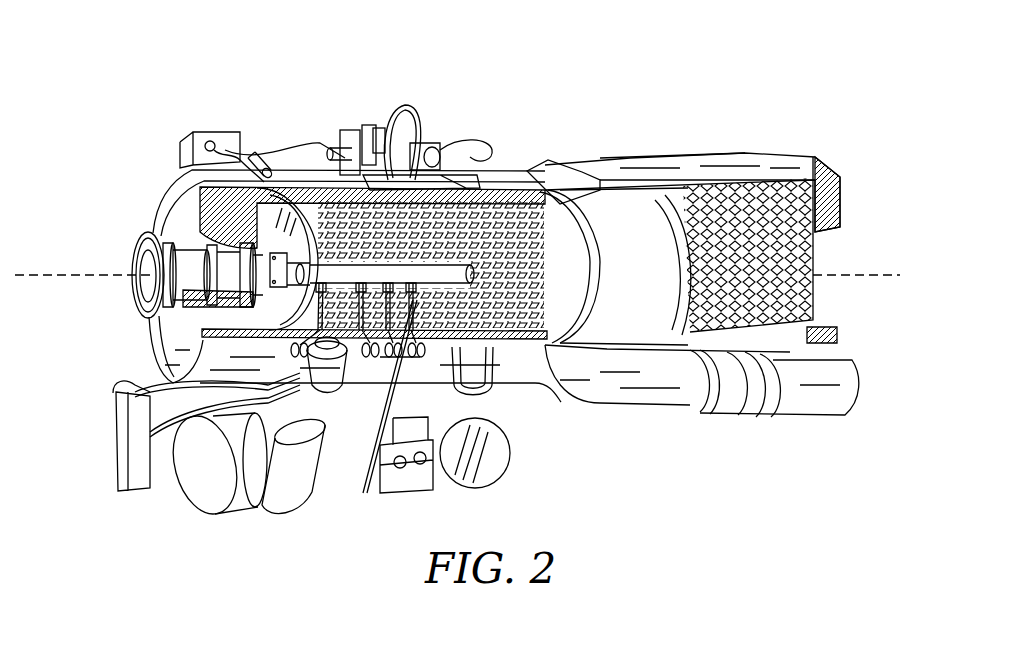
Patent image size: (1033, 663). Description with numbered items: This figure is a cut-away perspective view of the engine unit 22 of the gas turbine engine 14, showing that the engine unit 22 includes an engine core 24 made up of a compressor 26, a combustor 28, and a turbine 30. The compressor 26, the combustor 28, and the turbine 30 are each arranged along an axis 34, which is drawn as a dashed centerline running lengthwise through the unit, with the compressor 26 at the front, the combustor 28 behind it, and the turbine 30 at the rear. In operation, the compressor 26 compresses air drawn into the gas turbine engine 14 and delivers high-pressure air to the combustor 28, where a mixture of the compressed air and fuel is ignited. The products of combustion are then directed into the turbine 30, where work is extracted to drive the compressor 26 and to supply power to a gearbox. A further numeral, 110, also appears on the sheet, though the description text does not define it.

The gas turbine engine 110 is at (440, 260).
The gas turbine engine 14 is at (423, 98).
The engine unit 22 is at (584, 105).
The engine core 24 is at (613, 154).
The compressor 26 is at (353, 241).
The combustor 28 is at (617, 263).
The turbine 30 is at (750, 245).
The axis 34 is at (860, 270).